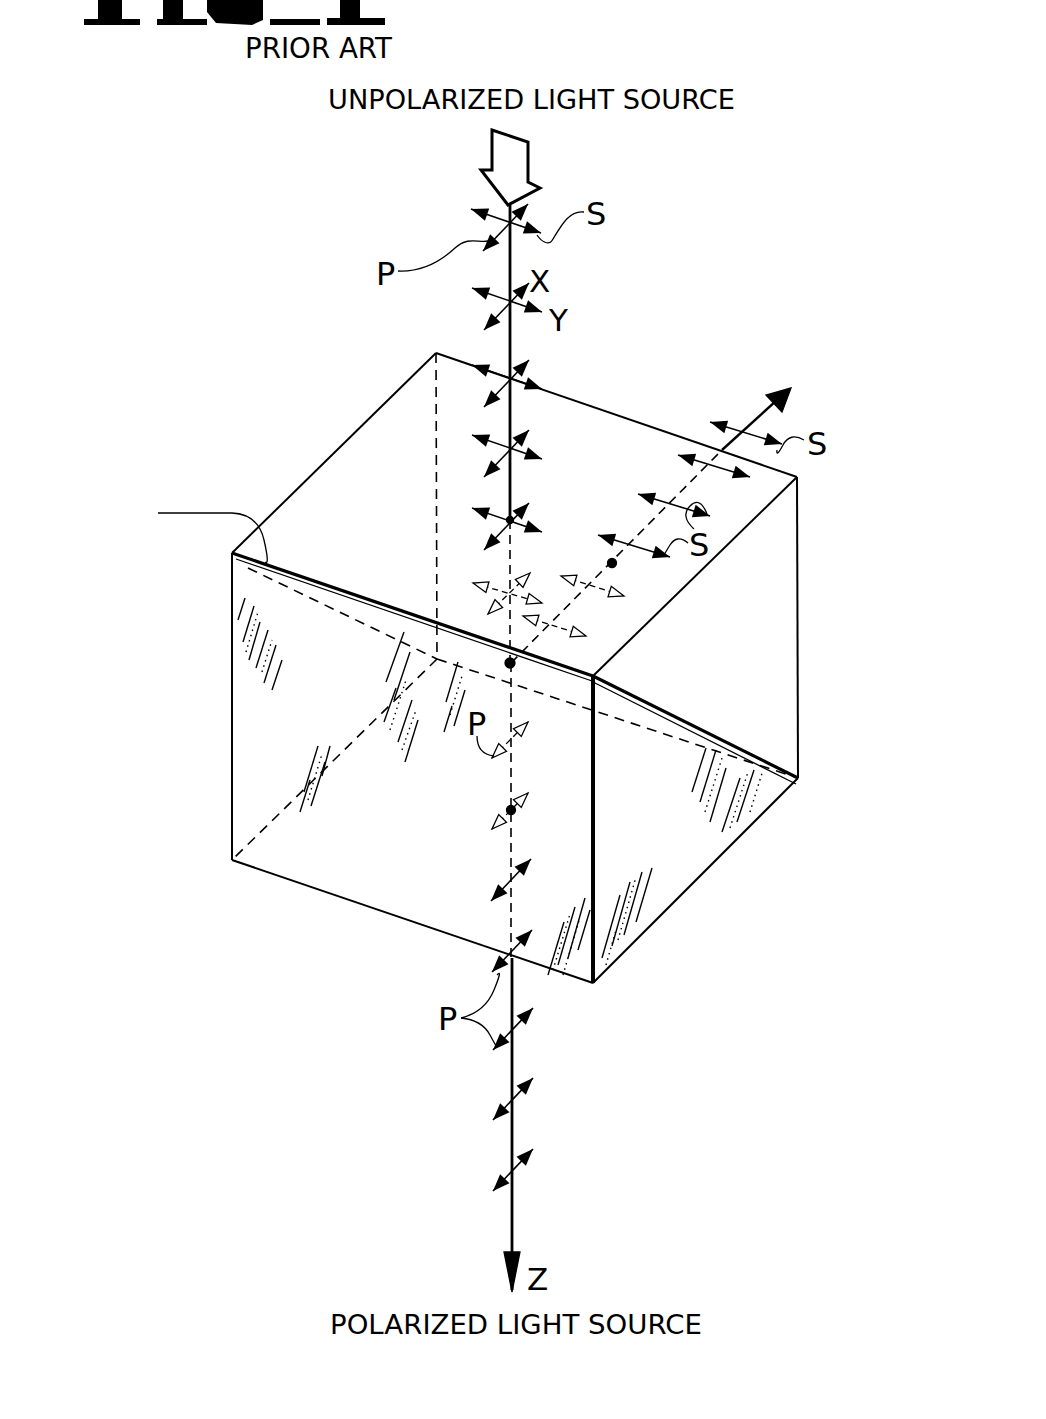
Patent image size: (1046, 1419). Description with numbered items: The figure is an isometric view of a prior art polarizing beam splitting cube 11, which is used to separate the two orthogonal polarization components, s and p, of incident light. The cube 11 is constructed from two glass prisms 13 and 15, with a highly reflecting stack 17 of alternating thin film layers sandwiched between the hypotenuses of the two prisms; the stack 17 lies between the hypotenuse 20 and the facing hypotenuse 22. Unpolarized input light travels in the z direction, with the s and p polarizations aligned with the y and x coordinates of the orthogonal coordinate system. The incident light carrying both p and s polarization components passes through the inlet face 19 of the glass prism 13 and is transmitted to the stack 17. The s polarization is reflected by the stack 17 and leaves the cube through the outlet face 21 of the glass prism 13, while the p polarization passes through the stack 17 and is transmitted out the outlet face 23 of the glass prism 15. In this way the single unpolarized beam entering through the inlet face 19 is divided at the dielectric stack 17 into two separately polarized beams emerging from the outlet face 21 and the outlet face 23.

The polarizing beam splitting cube 11 is at (261, 363).
The glass prism 13 is at (810, 604).
The glass prism 15 is at (216, 751).
The stack of alternating thin film layers 17 is at (378, 604).
The inlet face 19 is at (378, 447).
The hypotenuse 20 is at (633, 672).
The outlet face 21 is at (800, 748).
The hypotenuse 22 is at (672, 706).
The outlet face 23 is at (286, 880).